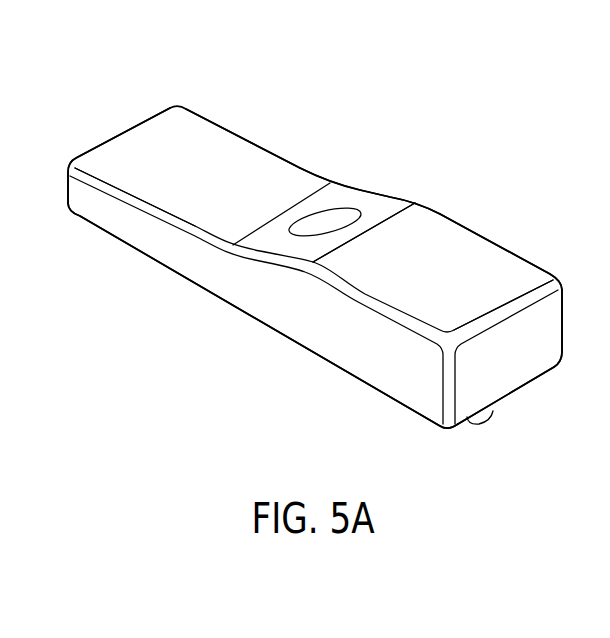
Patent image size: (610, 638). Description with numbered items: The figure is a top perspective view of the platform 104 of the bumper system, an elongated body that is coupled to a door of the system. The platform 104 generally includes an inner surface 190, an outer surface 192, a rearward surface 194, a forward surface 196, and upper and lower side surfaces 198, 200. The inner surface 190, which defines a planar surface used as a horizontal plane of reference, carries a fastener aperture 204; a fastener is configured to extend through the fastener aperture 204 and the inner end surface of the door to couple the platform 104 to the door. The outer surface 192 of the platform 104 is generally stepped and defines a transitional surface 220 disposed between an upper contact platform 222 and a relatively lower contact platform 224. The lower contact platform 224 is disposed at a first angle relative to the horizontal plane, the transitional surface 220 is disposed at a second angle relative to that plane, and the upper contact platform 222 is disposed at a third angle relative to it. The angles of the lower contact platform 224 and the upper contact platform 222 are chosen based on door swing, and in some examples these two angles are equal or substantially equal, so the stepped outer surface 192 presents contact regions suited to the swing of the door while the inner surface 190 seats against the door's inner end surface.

The platform 104 is at (424, 87).
The inner surface 190 is at (263, 323).
The outer surface 192 is at (305, 183).
The rearward surface 194 is at (517, 362).
The forward surface 196 is at (123, 137).
The upper side surface 198 is at (383, 347).
The lower side surface 200 is at (245, 137).
The fastener aperture 204 is at (347, 211).
The transitional surface 220 is at (397, 203).
The upper contact platform 222 is at (485, 250).
The lower contact platform 224 is at (178, 137).